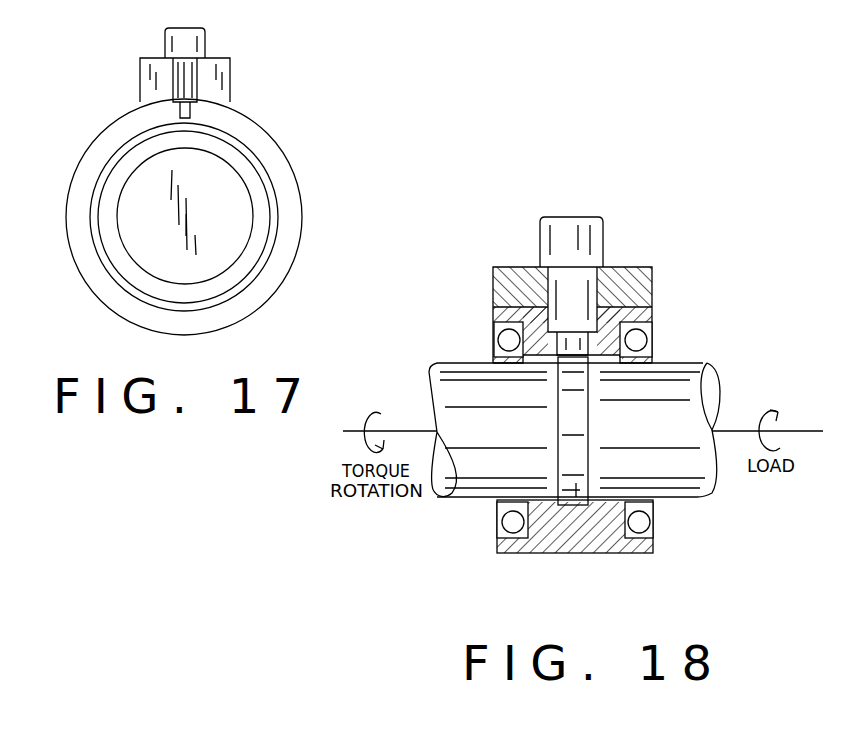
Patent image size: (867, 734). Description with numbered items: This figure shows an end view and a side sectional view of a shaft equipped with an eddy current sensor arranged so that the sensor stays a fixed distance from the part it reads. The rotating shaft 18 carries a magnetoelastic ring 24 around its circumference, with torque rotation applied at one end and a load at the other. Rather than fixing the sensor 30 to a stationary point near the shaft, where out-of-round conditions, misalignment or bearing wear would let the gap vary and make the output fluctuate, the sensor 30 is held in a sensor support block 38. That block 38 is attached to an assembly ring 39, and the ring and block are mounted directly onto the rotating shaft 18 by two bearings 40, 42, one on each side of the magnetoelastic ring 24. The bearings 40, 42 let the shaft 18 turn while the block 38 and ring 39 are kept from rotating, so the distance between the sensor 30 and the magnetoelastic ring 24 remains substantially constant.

In FIG. 17, the rotating shaft 18 is at (160, 232).
In FIG. 18, the rotating shaft 18 is at (685, 498).
In FIG. 17, the magnetoelastic ring 24 is at (262, 217).
In FIG. 18, the magnetoelastic ring 24 is at (585, 505).
In FIG. 17, the sensor 30 is at (205, 37).
In FIG. 18, the sensor 30 is at (588, 216).
In FIG. 17, the sensor support block 38 is at (150, 58).
In FIG. 18, the sensor support block 38 is at (630, 267).
In FIG. 17, the assembly ring 39 is at (298, 248).
In FIG. 18, the assembly ring 39 is at (502, 555).
In FIG. 18, the bearing 40 is at (653, 323).
In FIG. 18, the bearing 42 is at (493, 328).